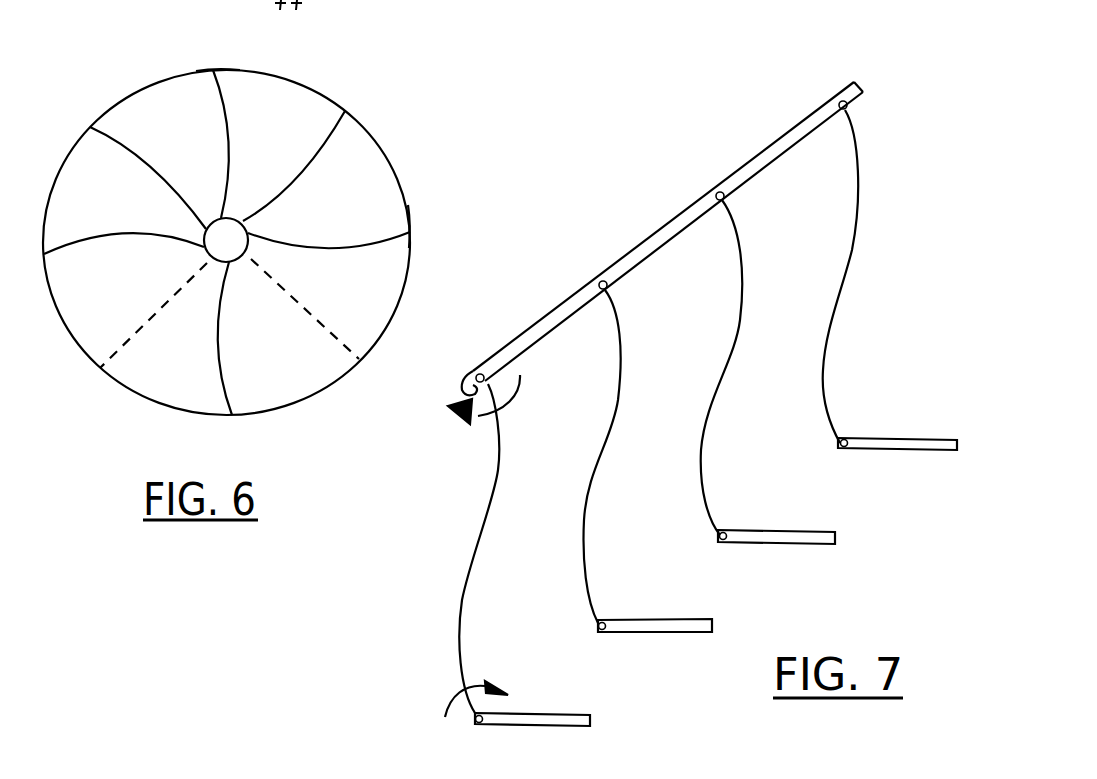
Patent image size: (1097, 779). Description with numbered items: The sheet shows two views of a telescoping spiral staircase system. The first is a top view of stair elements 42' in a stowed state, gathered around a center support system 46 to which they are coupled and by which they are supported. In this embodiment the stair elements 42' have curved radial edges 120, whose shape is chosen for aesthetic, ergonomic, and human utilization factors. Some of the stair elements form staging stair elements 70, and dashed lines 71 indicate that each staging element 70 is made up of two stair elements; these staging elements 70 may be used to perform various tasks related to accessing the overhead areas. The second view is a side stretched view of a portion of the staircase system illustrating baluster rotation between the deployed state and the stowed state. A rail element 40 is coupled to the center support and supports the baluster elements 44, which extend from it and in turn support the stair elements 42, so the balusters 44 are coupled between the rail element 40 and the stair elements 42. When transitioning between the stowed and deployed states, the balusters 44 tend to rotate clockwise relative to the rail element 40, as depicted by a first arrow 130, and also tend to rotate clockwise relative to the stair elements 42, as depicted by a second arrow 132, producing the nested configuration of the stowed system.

In FIG. 7, the rail element 40 is at (642, 262).
In FIG. 7, the stair elements 42 is at (716, 582).
In FIG. 6, the stair elements 42' is at (332, 135).
In FIG. 7, the baluster elements 44 is at (850, 245).
In FIG. 6, the center support system 46 is at (248, 228).
In FIG. 6, the staging stair elements 70 is at (126, 391).
In FIG. 6, the dashed lines 71 is at (177, 290).
In FIG. 6, the curved radial edges 120 is at (310, 170).
In FIG. 7, the first arrow 130 is at (510, 404).
In FIG. 7, the second arrow 132 is at (477, 681).